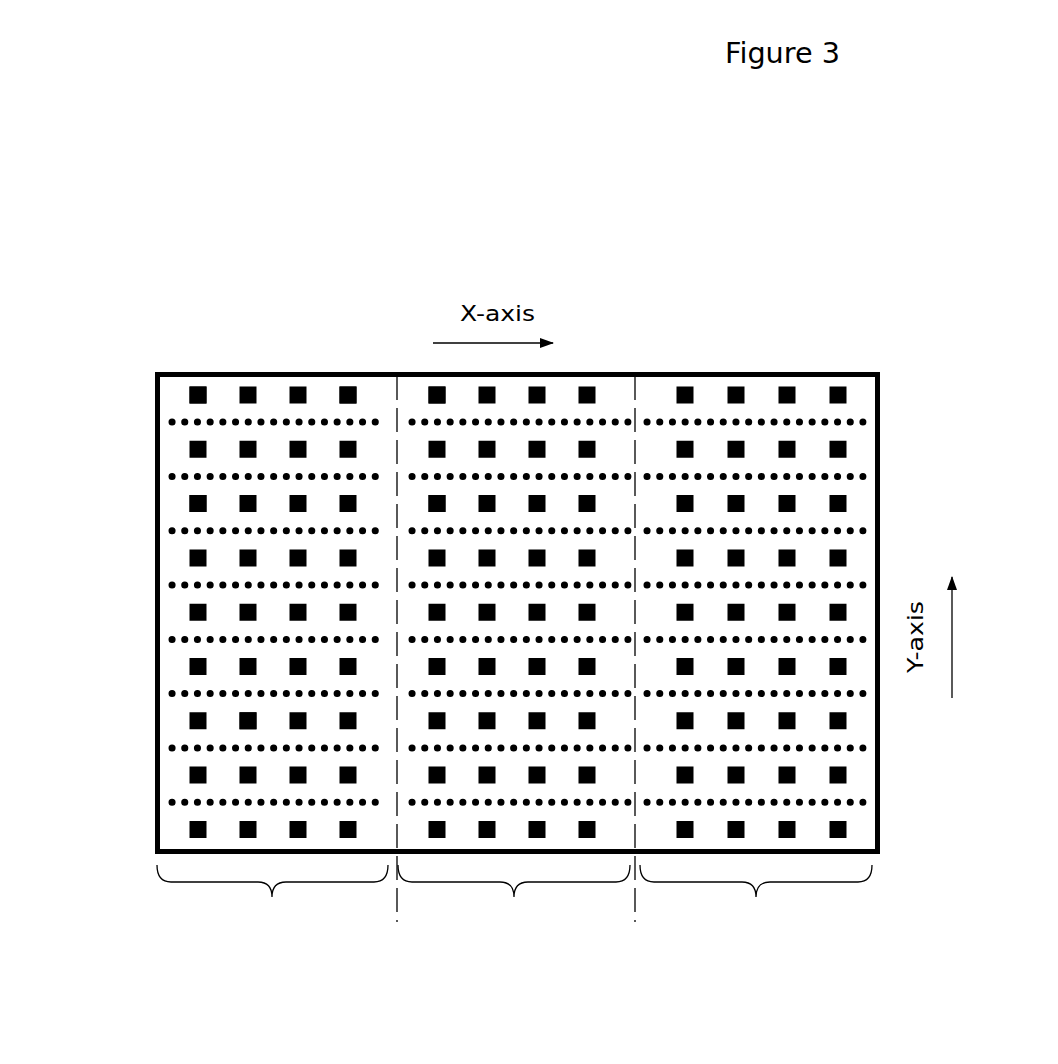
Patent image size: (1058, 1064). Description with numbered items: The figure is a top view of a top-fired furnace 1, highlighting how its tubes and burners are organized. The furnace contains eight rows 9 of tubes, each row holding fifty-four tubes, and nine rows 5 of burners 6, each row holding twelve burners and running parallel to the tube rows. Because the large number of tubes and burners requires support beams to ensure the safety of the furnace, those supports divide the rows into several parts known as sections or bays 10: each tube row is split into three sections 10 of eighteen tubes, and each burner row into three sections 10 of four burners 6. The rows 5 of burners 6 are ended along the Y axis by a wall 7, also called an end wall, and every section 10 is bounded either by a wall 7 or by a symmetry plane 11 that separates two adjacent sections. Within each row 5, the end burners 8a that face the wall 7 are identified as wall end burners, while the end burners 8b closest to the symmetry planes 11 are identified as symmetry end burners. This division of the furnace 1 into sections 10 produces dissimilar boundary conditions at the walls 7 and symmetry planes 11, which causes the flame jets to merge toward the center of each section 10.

The top-fired furnace 1 is at (313, 208).
The rows of burners 5 is at (180, 830).
The burner 6 is at (243, 728).
The wall 7 is at (148, 429).
The wall end burners 8a is at (200, 497).
The symmetry end burners 8b is at (432, 497).
The rows of tubes 9 is at (157, 587).
The sections 10 is at (514, 905).
The symmetry plane 11 is at (396, 945).